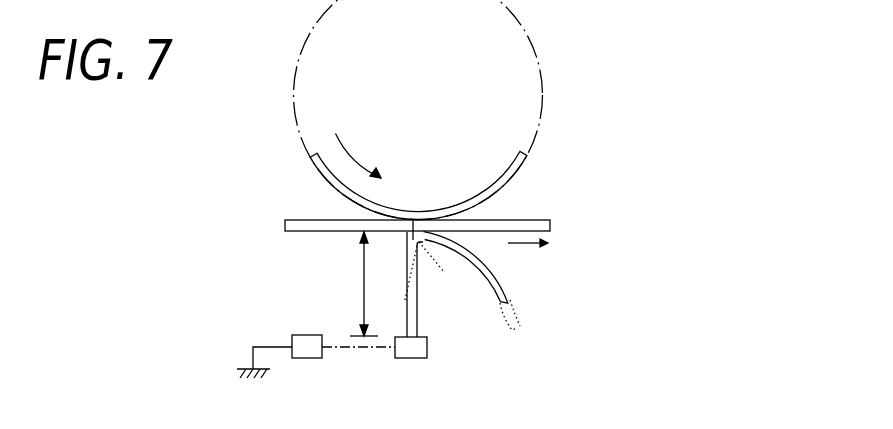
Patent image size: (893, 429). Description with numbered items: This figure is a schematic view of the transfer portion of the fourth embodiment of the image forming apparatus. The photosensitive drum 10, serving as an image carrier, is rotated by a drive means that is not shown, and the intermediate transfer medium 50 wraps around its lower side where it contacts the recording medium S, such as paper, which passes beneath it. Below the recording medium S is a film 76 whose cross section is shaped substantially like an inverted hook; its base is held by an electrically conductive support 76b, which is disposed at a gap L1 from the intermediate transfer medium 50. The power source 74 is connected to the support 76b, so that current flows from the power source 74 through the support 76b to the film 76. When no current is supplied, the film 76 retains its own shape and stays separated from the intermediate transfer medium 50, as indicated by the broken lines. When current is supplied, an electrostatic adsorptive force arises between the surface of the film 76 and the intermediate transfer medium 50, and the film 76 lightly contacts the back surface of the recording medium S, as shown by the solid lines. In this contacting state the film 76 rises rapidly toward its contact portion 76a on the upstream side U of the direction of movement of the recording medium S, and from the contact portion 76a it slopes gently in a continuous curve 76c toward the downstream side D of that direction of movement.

The photosensitive drum 10 is at (537, 72).
The intermediate transfer medium 50 is at (513, 160).
The power source 74 is at (305, 335).
The film 76 is at (436, 262).
The contact portion 76a is at (413, 220).
The support 76b is at (428, 347).
The continuous curve 76c is at (492, 258).
The recording medium S is at (307, 219).
The downstream side D is at (478, 236).
The gap L1 is at (357, 284).
The upstream side U is at (400, 237).